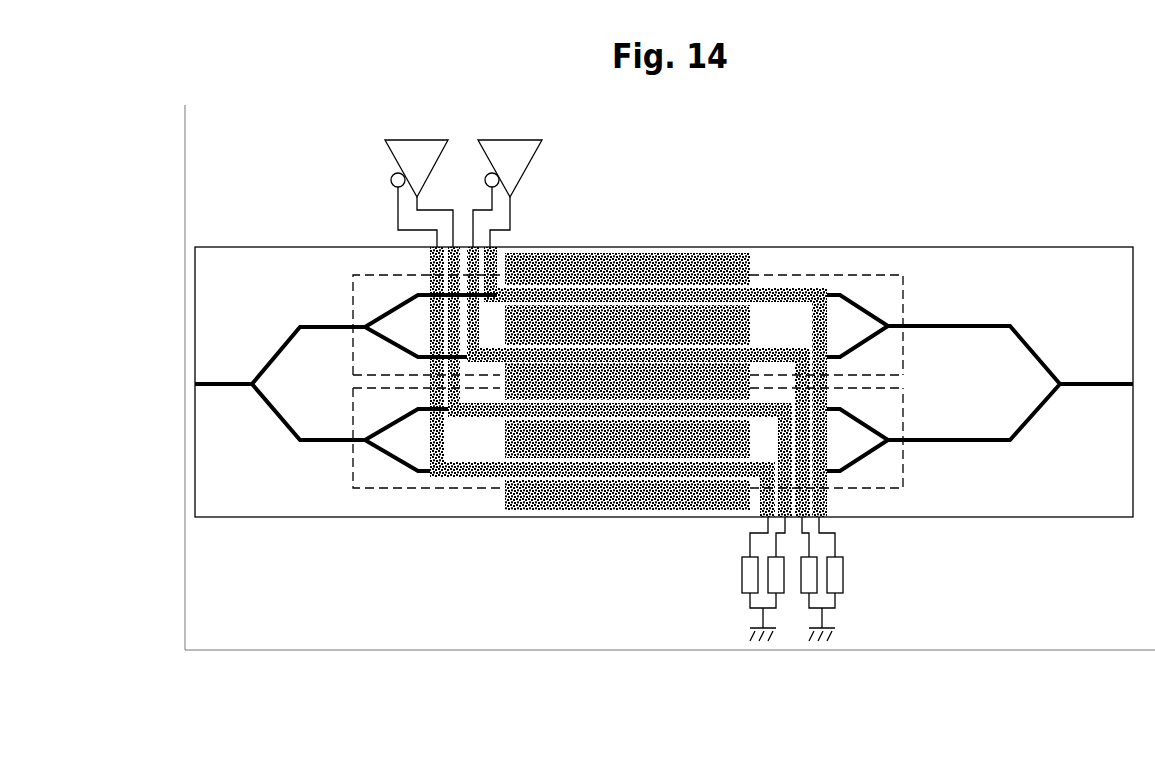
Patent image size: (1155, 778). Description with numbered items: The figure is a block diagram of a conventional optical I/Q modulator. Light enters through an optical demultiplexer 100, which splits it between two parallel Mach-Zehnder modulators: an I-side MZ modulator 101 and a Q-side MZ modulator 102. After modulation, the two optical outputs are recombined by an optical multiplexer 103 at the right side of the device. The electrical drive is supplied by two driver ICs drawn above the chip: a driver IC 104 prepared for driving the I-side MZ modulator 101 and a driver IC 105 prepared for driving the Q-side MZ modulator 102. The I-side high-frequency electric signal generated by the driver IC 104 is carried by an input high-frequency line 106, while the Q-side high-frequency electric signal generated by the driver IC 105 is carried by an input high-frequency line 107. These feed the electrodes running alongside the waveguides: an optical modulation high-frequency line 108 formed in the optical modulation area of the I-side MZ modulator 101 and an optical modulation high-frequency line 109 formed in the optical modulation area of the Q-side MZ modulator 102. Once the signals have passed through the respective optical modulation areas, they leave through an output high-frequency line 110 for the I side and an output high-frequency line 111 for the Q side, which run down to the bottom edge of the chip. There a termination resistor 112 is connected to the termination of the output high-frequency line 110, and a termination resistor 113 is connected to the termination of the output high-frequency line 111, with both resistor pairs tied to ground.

The optical demultiplexer 100 is at (242, 372).
The I-side MZ modulator 101 is at (905, 300).
The Q-side MZ modulator 102 is at (905, 413).
The optical multiplexer 103 is at (1067, 370).
The driver IC 104 is at (533, 140).
The driver IC 105 is at (393, 140).
The input high-frequency line 106 is at (473, 327).
The input high-frequency line 107 is at (437, 337).
The optical modulation high-frequency line 108 is at (642, 352).
The optical modulation high-frequency line 109 is at (602, 405).
The output high-frequency line 110 is at (812, 363).
The output high-frequency line 111 is at (783, 443).
The termination resistor 112 is at (810, 578).
The termination resistor 113 is at (772, 578).